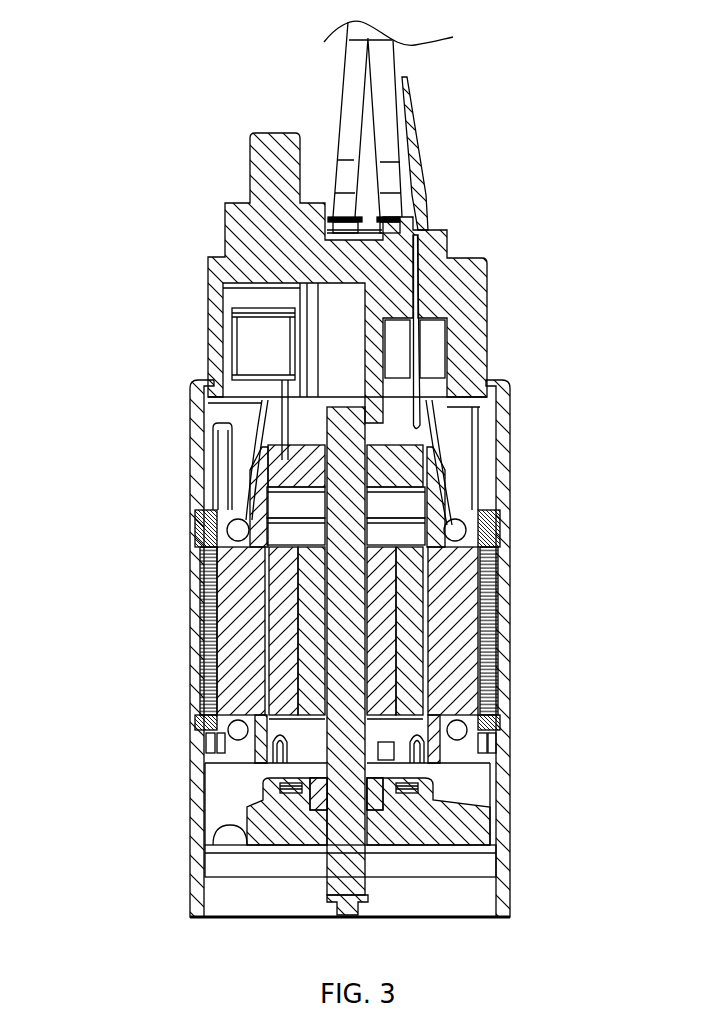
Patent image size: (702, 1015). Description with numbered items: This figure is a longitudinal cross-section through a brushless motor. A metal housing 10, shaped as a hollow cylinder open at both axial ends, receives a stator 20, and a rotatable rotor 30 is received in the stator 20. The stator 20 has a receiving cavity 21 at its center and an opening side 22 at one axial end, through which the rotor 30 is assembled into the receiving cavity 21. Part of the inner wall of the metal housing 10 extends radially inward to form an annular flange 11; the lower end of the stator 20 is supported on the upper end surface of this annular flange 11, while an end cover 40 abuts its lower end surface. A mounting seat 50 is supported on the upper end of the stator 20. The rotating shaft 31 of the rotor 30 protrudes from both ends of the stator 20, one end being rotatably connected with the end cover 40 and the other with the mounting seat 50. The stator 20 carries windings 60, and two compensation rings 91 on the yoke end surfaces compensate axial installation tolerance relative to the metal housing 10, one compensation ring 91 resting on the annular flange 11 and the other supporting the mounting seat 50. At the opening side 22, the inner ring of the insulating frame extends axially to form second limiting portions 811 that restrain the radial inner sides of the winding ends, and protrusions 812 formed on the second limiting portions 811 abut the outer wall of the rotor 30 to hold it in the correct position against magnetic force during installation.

The metal housing 10 is at (503, 645).
The annular flange 11 is at (493, 788).
The stator 20 is at (489, 597).
The receiving cavity 21 is at (397, 660).
The opening side 22 is at (397, 730).
The rotor 30 is at (484, 547).
The rotating shaft 31 is at (343, 497).
The end cover 40 is at (427, 822).
The mounting seat 50 is at (487, 312).
The windings 60 is at (466, 536).
The compensation ring 91 is at (198, 513).
The second limiting portion 811 is at (230, 736).
The protrusion 812 is at (268, 752).